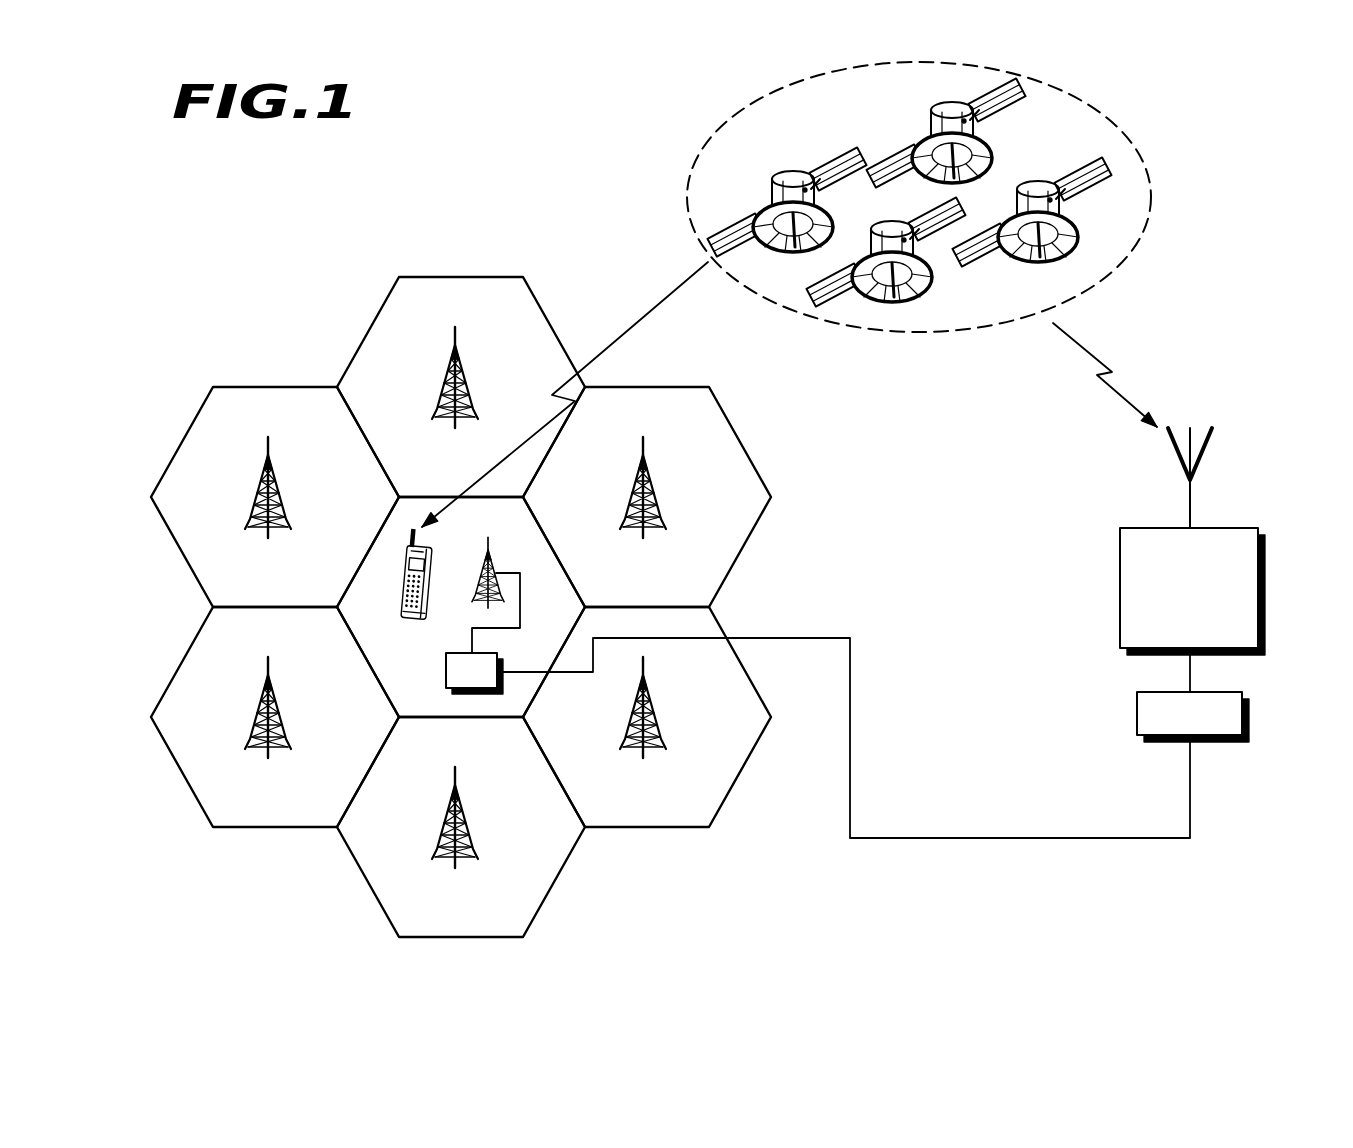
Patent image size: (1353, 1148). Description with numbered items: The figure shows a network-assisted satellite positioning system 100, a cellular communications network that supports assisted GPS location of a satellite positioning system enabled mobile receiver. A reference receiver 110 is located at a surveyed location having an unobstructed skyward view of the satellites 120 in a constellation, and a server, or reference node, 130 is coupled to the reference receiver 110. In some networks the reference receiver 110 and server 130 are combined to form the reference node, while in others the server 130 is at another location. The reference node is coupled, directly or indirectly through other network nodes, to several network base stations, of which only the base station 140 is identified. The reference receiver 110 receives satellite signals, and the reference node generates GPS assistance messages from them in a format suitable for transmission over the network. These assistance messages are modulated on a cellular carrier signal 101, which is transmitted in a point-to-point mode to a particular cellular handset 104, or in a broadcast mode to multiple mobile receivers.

The network-assisted satellite positioning system 100 is at (502, 167).
The cellular carrier signal 101 is at (480, 543).
The cellular handset 104 is at (402, 611).
The base station 140 is at (446, 667).
The satellites 120 is at (1104, 107).
The reference receiver 110 is at (1120, 587).
The server 130 is at (1137, 711).